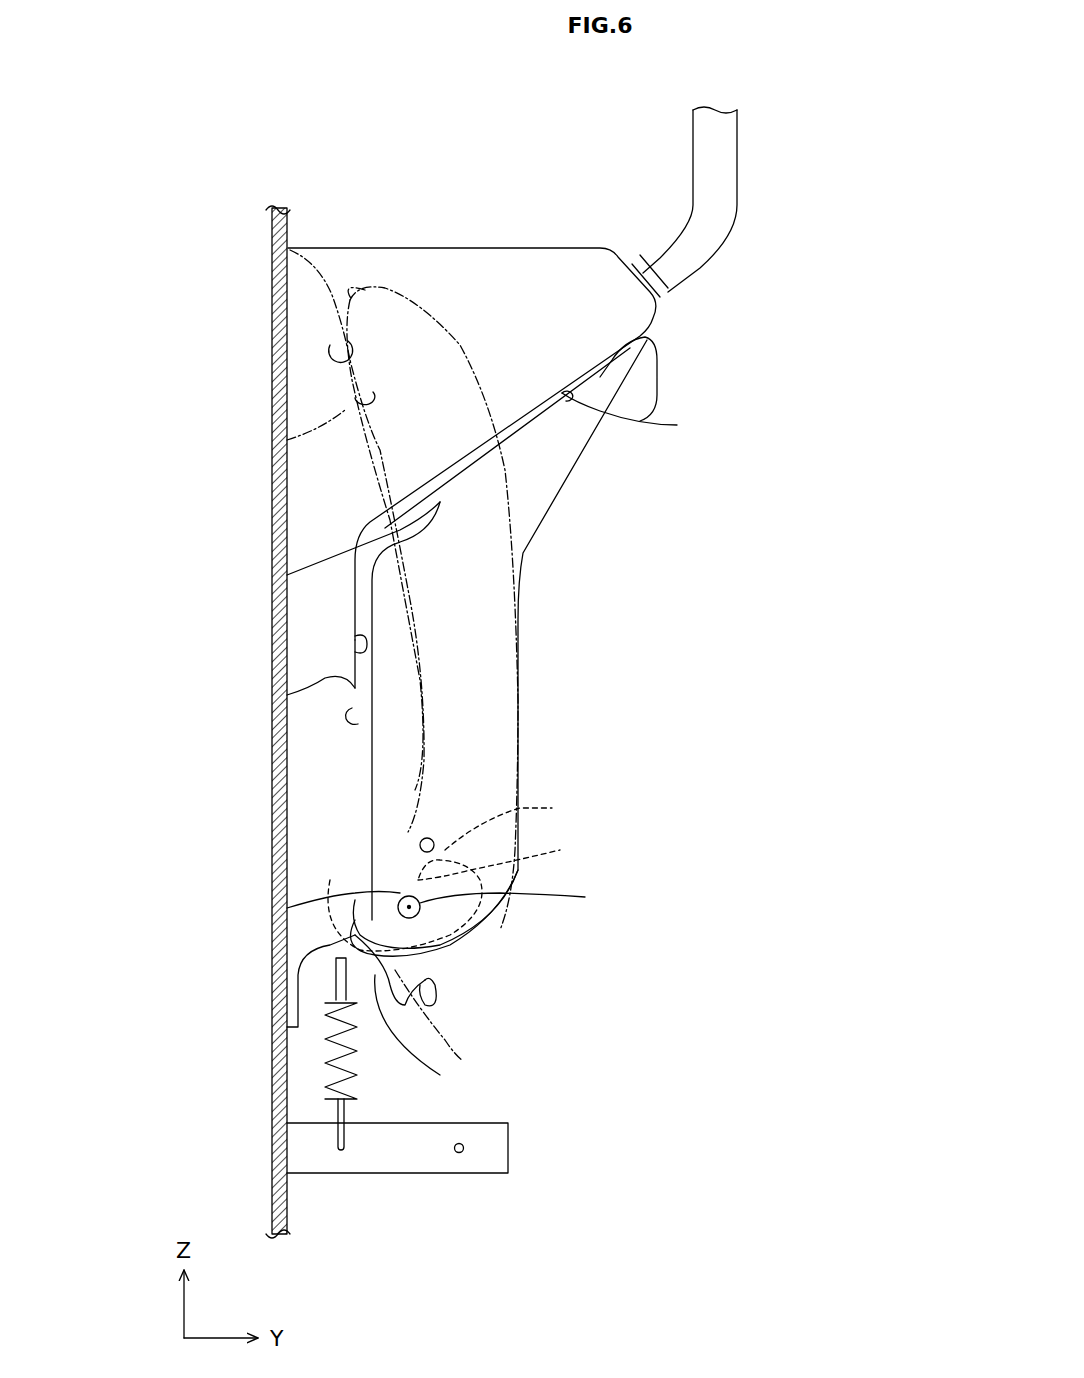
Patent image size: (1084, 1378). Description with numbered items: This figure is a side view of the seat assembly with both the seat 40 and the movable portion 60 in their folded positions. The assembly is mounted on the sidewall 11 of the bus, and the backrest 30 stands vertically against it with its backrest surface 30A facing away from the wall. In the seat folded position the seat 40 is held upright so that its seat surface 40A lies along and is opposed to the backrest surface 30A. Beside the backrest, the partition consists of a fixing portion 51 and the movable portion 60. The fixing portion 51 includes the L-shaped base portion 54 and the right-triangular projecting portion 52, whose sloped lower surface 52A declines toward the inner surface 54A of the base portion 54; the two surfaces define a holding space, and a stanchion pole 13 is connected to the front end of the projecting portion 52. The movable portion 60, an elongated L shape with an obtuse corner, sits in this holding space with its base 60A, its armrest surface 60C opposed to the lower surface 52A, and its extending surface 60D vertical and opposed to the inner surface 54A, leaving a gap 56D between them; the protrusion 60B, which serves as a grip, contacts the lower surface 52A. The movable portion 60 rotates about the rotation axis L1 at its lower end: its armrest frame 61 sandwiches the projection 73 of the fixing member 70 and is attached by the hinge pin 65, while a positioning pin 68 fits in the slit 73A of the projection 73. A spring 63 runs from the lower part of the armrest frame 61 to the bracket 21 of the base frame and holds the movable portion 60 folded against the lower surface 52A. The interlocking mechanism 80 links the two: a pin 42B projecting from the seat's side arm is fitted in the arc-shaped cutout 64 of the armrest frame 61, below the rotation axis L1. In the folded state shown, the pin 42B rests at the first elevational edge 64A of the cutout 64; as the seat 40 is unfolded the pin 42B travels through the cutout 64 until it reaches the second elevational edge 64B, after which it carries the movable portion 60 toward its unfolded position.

The sidewall 11 is at (287, 1198).
The stanchion pole 13 is at (722, 145).
The bracket 21 is at (407, 1158).
The backrest 30 is at (342, 255).
The backrest surface 30A is at (287, 440).
The seat 40 is at (453, 303).
The seat surface 40A is at (340, 337).
The pin 42B is at (462, 1060).
The fixing portion 51 is at (440, 200).
The projecting portion 52 is at (527, 268).
The lower surface 52A is at (287, 575).
The base portion 54 is at (313, 618).
The inner surface 54A is at (350, 655).
The gap 56D is at (520, 437).
The movable portion 60 is at (552, 565).
The base 60A is at (548, 505).
The protrusion 60B is at (638, 345).
The armrest surface 60C is at (642, 414).
The extending surface 60D is at (358, 724).
The armrest frame 61 is at (470, 942).
The spring 63 is at (350, 1085).
The cutout 64 is at (386, 1008).
The first elevational edge 64A is at (430, 1000).
The second elevational edge 64B is at (300, 993).
The hinge pin 65 is at (287, 908).
The positioning pin 68 is at (430, 838).
The fixing member 70 is at (295, 1034).
The projection 73 is at (460, 895).
The slit 73A is at (521, 823).
The interlocking mechanism 80 is at (522, 1053).
The rotation axis L1 is at (509, 897).